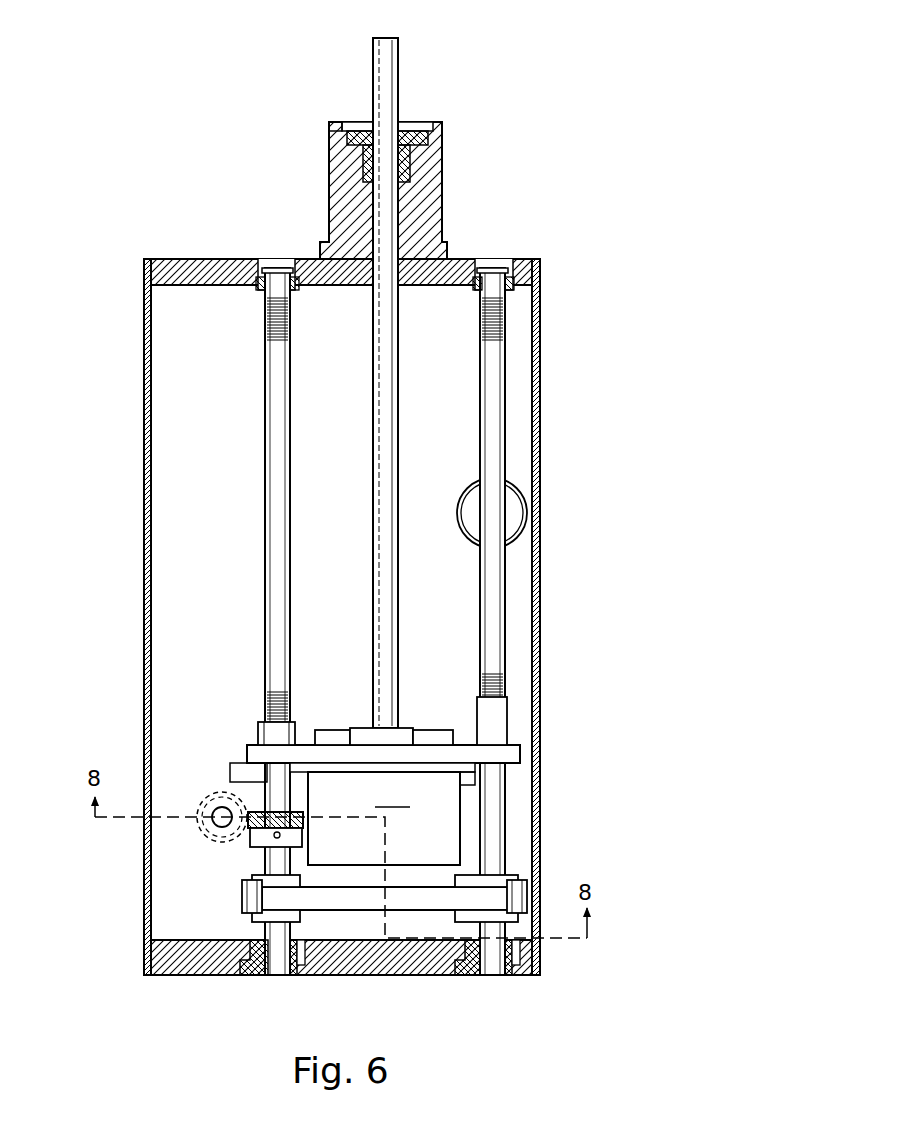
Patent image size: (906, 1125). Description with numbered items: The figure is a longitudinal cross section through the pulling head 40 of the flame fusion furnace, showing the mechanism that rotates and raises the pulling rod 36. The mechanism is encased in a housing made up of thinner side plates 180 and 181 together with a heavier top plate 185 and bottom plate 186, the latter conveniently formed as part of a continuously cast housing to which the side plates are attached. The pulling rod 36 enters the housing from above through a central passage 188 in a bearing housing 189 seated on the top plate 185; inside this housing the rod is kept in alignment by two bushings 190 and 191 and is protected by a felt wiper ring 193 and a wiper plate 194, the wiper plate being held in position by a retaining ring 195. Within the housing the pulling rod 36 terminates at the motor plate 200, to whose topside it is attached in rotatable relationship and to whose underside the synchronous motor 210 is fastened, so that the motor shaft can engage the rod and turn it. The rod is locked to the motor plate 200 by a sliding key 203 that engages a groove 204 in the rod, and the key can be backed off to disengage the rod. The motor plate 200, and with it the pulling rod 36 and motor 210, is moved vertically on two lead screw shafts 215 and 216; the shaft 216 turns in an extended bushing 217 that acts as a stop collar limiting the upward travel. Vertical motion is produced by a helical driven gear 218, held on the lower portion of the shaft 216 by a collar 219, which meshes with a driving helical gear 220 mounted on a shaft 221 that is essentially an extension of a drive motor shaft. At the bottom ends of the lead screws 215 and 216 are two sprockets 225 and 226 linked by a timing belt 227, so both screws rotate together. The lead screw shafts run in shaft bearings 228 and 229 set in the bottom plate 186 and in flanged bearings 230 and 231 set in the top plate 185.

The pulling rod 36 is at (386, 68).
The housing assembly 40 is at (337, 622).
The side plate 180 is at (538, 392).
The side plate 181 is at (146, 492).
The top plate 185 is at (449, 270).
The bottom plate 186 is at (380, 975).
The central passage 188 is at (425, 194).
The bearing housing 189 is at (432, 222).
The bushing 190 is at (397, 286).
The bushing 191 is at (440, 166).
The felt wiper ring 193 is at (440, 141).
The wiper plate 194 is at (406, 124).
The retaining ring 195 is at (330, 128).
The motor plate 200 is at (521, 757).
The sliding key 203 is at (405, 733).
The groove 204 is at (330, 733).
The synchronous motor 210 is at (384, 818).
The lead screw shaft 215 is at (503, 578).
The lead screw shaft 216 is at (268, 582).
The extended bushing 217 is at (275, 735).
The helical driven gear 218 is at (252, 838).
The collar 219 is at (270, 842).
The driving helical gear 220 is at (207, 812).
The shaft 221 is at (222, 814).
The sprocket 225 is at (520, 880).
The sprocket 226 is at (296, 916).
The timing belt 227 is at (405, 898).
The shaft bearing 228 is at (487, 975).
The shaft bearing 229 is at (264, 975).
The flanged bearing 230 is at (510, 262).
The flanged bearing 231 is at (262, 262).